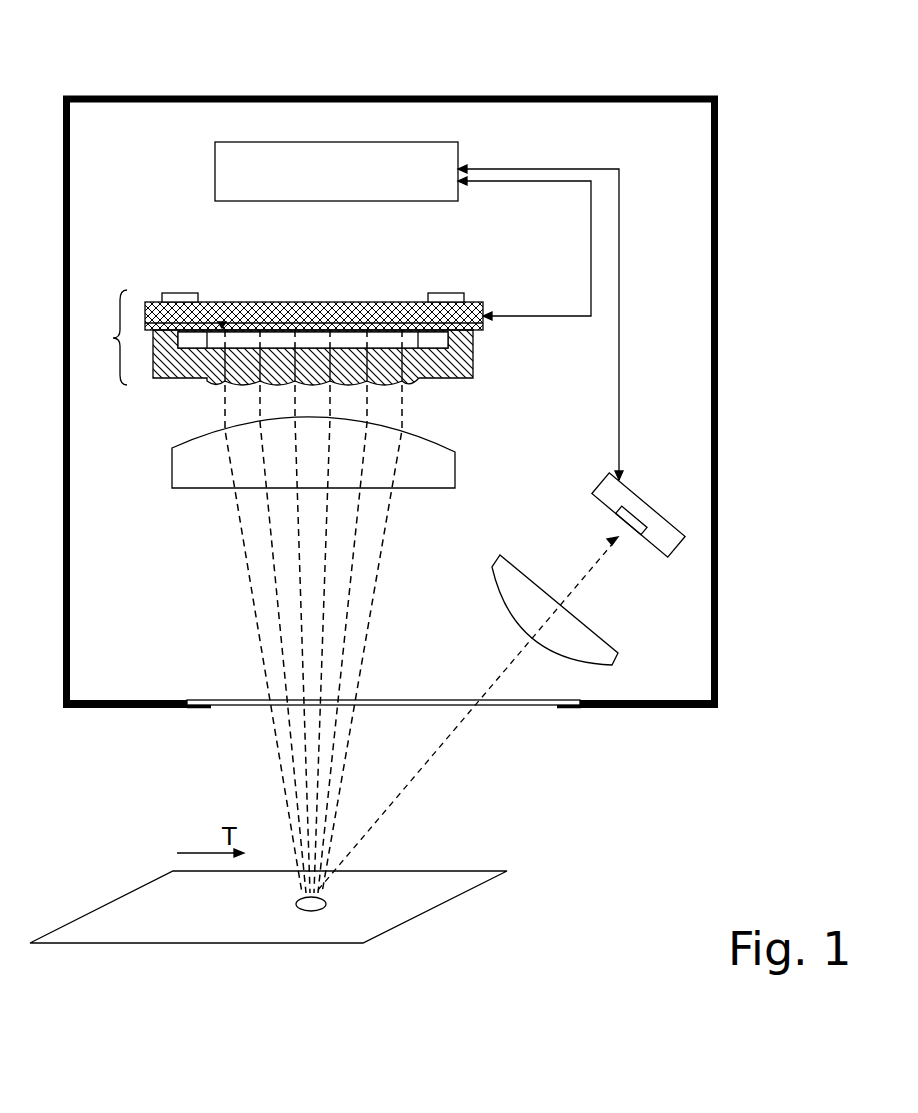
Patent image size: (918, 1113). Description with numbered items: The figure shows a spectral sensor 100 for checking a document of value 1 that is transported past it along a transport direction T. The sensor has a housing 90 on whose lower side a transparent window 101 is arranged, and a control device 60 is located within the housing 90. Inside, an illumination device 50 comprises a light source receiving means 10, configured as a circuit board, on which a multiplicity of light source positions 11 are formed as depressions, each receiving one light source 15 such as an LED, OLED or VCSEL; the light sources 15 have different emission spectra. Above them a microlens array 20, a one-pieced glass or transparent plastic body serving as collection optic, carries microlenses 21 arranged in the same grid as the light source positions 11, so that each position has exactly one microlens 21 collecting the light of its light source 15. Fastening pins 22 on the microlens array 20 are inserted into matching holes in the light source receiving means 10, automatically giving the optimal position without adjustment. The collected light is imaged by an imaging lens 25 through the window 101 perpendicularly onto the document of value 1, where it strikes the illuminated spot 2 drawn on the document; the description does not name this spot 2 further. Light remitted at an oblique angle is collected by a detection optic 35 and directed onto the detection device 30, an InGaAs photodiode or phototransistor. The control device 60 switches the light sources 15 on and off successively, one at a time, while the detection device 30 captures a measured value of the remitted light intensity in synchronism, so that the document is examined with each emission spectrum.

The spectral sensor 100 is at (415, 83).
The housing 90 is at (720, 357).
The transparent window 101 is at (207, 700).
The control device 60 is at (215, 172).
The illumination device 50 is at (105, 337).
The light source receiving means 10 is at (344, 282).
The light source positions 11 is at (221, 321).
The light sources 15 is at (225, 320).
The fastening pins 22 is at (444, 293).
The microlens array 20 is at (347, 373).
The microlenses 21 is at (405, 383).
The imaging lens 25 is at (457, 458).
The detection device 30 is at (644, 527).
The detection optic 35 is at (620, 660).
The document of value 1 is at (451, 871).
The measurement spot 2 is at (325, 906).